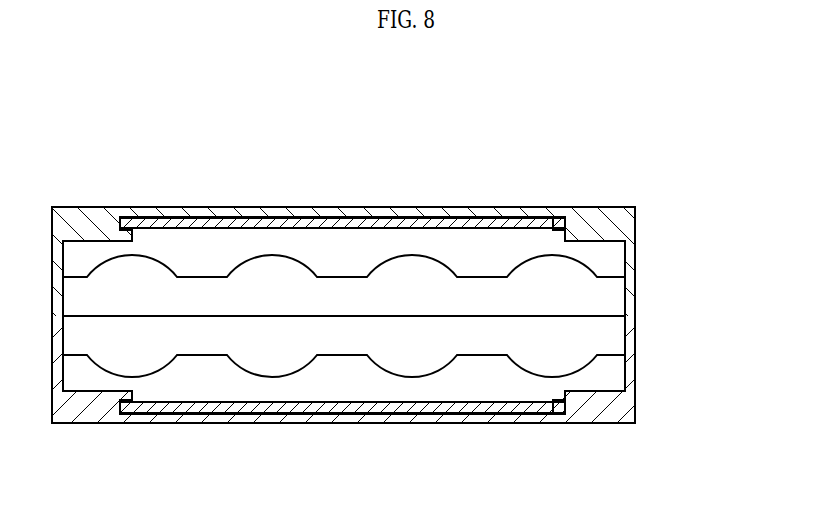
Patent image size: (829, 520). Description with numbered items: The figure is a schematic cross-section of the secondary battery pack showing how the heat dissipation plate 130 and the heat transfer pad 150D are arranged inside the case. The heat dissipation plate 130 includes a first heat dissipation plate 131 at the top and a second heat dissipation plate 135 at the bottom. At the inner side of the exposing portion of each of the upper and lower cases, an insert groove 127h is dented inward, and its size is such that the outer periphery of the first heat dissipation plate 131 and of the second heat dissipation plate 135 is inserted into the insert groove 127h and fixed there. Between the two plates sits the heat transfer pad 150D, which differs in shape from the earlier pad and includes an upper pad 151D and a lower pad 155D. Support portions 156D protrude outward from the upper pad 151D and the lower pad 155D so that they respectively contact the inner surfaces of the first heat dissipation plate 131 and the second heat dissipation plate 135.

The insert groove 127h is at (126, 222).
The support portion 156D is at (288, 222).
The first heat dissipation plate 131 is at (387, 222).
The second heat dissipation plate 135 is at (385, 413).
The heat dissipation plate 130 is at (416, 282).
The upper pad 151D is at (611, 257).
The lower pad 155D is at (380, 372).
The heat transfer pad 150D is at (410, 315).